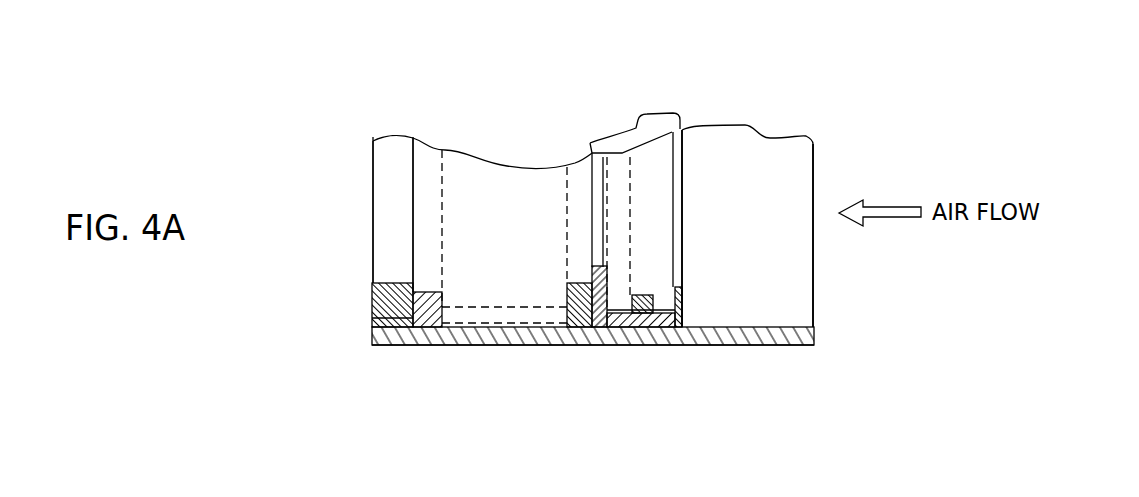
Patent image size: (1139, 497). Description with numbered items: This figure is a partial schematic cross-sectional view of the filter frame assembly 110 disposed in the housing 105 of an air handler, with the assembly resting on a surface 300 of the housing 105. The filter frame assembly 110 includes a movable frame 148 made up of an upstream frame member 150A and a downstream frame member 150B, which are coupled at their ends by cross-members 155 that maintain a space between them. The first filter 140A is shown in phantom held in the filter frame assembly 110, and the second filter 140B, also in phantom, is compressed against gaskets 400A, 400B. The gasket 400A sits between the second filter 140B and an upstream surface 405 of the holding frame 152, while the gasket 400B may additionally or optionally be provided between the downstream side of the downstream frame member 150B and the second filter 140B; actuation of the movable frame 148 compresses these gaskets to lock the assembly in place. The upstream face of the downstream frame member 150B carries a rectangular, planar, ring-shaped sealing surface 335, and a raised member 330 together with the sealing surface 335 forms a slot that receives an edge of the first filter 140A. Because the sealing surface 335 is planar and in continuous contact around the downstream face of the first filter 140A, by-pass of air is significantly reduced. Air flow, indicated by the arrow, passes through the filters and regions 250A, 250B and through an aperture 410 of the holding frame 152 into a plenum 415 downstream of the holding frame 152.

The filter frame assembly 110 is at (634, 99).
The movable frame 148 is at (655, 128).
The first filter 140A is at (618, 165).
The second filter 140B is at (480, 162).
The aperture 410 is at (385, 197).
The plenum 415 is at (273, 231).
The second chamber 250B is at (600, 210).
The first chamber 250A is at (682, 195).
The upstream surface 405 is at (420, 283).
The gasket 400A is at (429, 312).
The holding frame 152 is at (390, 318).
The gasket 400B is at (568, 293).
The downstream frame member 150B is at (606, 302).
The sealing surface 335 is at (621, 318).
The cross-member 155 is at (644, 318).
The raised member 330 is at (646, 298).
The upstream frame member 150A is at (682, 307).
The surface 300 is at (800, 327).
The housing 105 is at (773, 345).